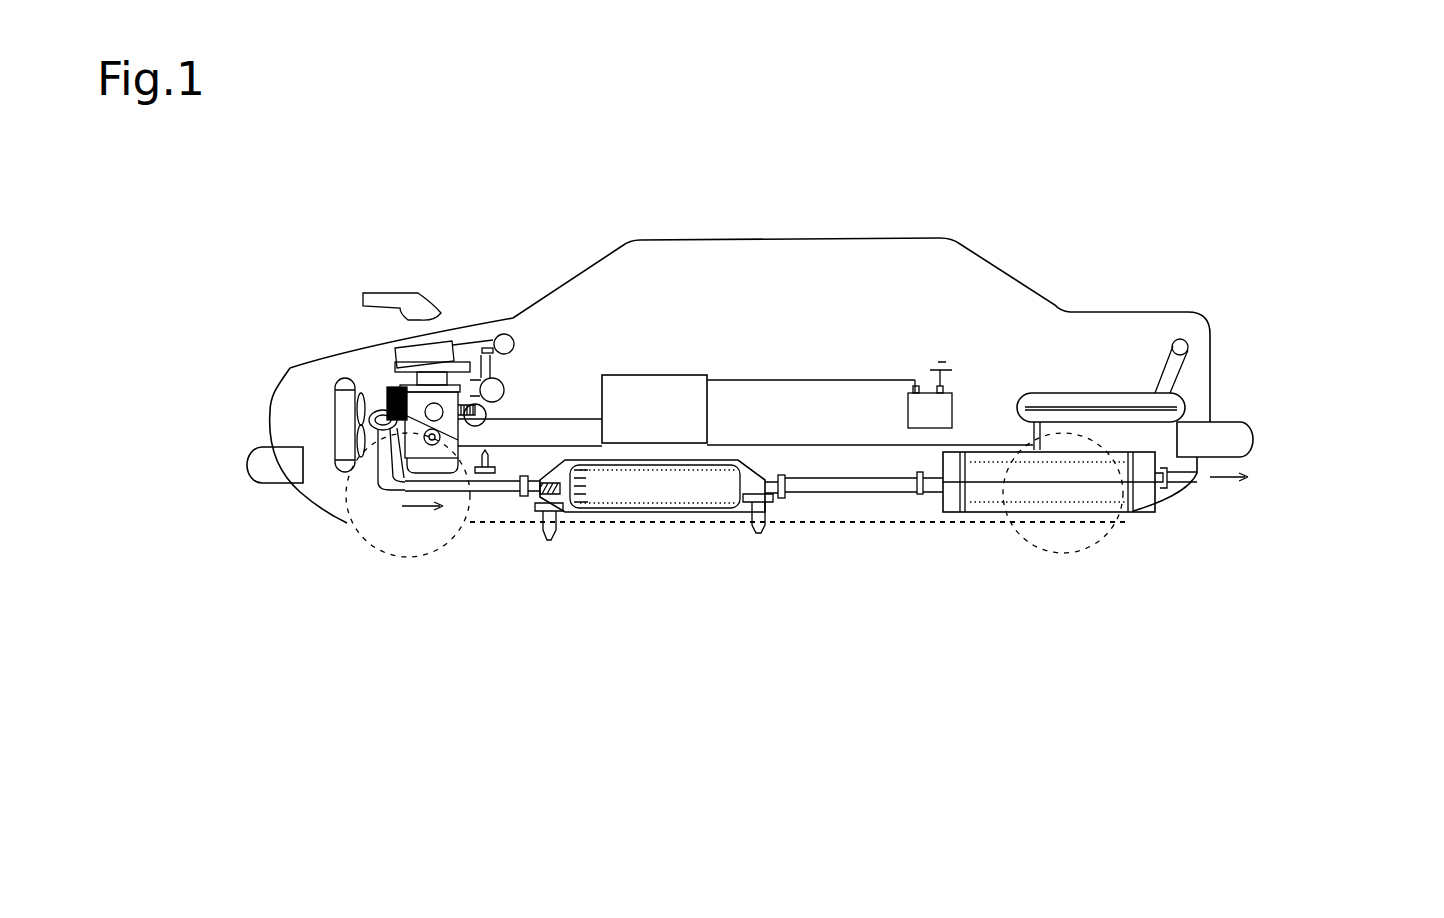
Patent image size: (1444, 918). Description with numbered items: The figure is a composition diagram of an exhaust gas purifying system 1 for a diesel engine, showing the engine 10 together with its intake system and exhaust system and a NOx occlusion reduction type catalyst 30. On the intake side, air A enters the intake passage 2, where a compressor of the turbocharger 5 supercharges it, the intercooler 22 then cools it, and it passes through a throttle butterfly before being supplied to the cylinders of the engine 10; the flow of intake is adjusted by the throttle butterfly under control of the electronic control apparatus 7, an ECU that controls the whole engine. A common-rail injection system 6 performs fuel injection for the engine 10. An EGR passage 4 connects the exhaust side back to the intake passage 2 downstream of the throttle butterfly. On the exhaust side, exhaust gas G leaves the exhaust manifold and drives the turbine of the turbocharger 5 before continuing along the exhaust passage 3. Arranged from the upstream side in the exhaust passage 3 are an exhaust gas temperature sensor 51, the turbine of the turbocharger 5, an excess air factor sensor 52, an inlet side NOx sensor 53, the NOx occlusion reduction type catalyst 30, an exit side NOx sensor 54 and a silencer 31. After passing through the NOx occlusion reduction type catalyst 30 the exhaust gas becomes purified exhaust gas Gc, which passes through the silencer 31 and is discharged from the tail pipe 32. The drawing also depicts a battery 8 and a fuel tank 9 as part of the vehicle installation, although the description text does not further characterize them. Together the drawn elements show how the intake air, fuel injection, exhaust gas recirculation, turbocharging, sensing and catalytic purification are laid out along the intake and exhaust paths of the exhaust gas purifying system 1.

The exhaust gas purifying system 1 is at (1022, 229).
The intake passage 2 is at (473, 347).
The exhaust passage 3 is at (815, 487).
The EGR passage 4 is at (497, 373).
The turbocharger 5 is at (410, 437).
The common-rail injection system 6 is at (480, 368).
The electronic control apparatus (electronic control box) 7 is at (684, 393).
The battery 8 is at (940, 407).
The fuel tank 9 is at (1090, 395).
The engine 10 is at (466, 304).
The intercooler 22 is at (437, 347).
The NOx occlusion reduction type catalyst 30 is at (618, 495).
The silencer 31 is at (1073, 487).
The tail pipe 32 is at (522, 358).
The exhaust gas temperature sensor 51 is at (290, 368).
The excess air factor (λ) sensor 52 is at (506, 497).
The inlet side NOx sensor 53 is at (550, 540).
The exit side NOx sensor 54 is at (762, 533).
The air A is at (364, 296).
The exhaust gas G is at (419, 513).
The purified exhaust gas Gc is at (1227, 482).